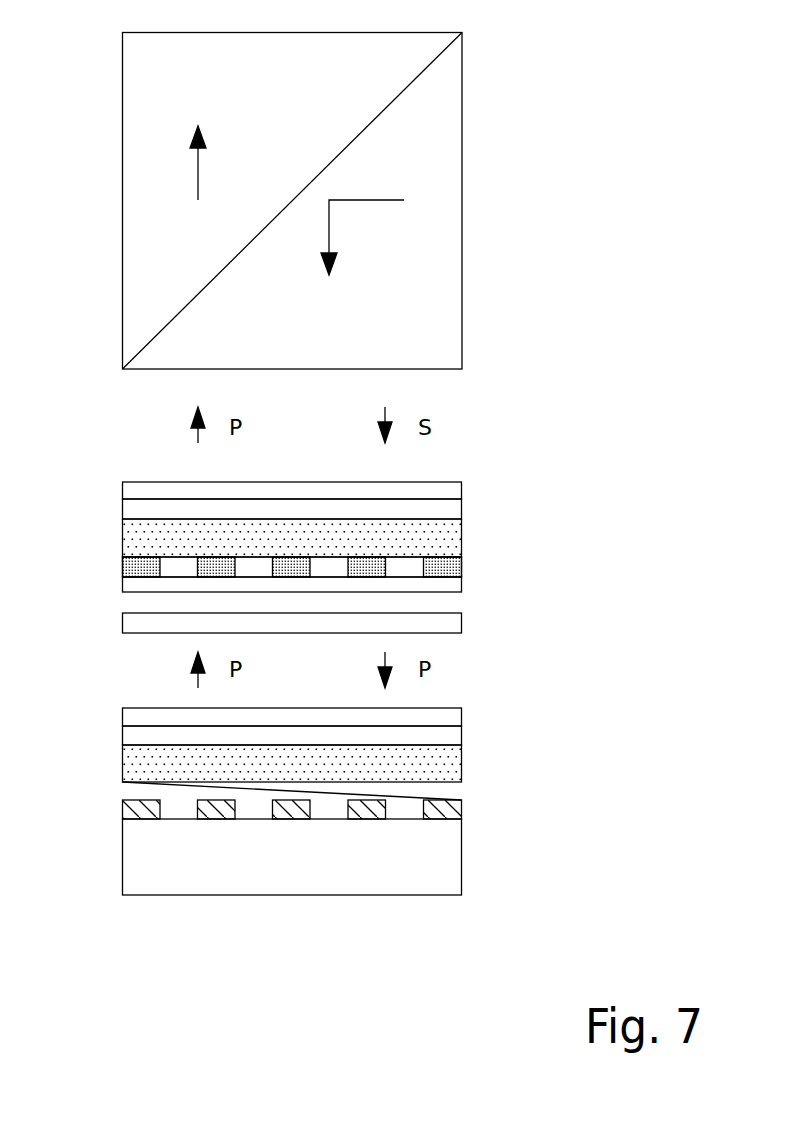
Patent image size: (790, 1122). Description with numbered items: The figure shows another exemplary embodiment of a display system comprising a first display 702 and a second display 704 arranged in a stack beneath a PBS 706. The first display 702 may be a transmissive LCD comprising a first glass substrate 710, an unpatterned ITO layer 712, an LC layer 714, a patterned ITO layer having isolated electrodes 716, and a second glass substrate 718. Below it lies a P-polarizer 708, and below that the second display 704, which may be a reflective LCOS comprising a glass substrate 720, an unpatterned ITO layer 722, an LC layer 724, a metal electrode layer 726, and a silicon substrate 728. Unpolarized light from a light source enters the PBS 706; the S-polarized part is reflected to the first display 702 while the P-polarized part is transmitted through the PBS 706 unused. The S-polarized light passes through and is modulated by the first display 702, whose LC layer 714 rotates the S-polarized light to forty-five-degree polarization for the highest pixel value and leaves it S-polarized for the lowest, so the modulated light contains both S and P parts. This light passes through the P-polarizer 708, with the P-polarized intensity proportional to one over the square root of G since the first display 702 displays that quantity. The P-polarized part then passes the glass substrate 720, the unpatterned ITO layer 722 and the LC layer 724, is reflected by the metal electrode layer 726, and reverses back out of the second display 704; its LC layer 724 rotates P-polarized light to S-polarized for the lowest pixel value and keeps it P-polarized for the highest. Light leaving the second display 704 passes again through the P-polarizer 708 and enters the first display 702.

The first display 702 is at (312, 491).
The second display 704 is at (309, 786).
The PBS 706 is at (365, 82).
The P-polarizer 708 is at (473, 622).
The first glass substrate 710 is at (473, 488).
The unpatterned ITO layer 712 is at (473, 510).
The LC layer 714 is at (473, 539).
The isolated electrodes 716 is at (473, 567).
The second glass substrate 718 is at (473, 585).
The glass substrate 720 is at (473, 717).
The unpatterned ITO layer 722 is at (473, 735).
The LC layer 724 is at (473, 763).
The metal electrode layer 726 is at (473, 810).
The silicon substrate 728 is at (425, 870).